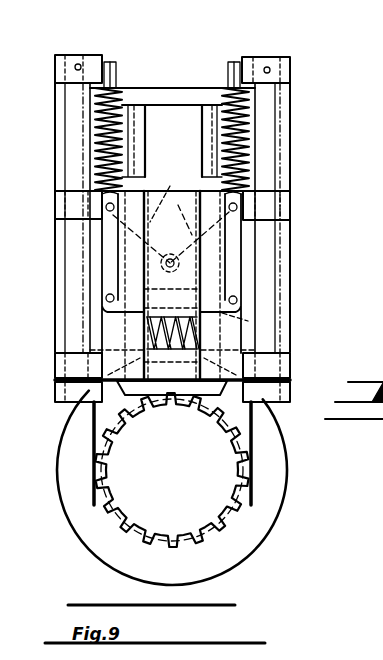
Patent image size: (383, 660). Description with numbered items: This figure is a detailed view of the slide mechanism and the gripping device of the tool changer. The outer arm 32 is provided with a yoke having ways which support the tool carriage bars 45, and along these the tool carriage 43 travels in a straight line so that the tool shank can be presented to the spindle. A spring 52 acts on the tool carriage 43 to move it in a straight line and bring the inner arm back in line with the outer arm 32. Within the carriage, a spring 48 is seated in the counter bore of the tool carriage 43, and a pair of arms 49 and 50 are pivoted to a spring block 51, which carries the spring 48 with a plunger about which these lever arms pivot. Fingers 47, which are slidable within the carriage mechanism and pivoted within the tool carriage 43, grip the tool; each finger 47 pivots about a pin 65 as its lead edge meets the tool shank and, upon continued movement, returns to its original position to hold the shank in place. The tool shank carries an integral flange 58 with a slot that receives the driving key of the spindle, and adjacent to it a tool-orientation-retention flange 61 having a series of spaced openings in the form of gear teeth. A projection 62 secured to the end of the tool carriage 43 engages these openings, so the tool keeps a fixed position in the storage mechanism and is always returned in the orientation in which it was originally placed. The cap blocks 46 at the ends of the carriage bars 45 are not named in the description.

The arm 32 is at (291, 113).
The tool carriage 43 is at (72, 203).
The tool carriage bars 45 is at (75, 250).
The cap block 46 is at (79, 64).
The fingers 47 is at (95, 428).
The spring 48 is at (150, 328).
The arm 49 is at (159, 198).
The arm 50 is at (171, 238).
The spring block 51 is at (247, 323).
The spring 52 is at (120, 90).
The flange 58 is at (273, 525).
The tool-orientation-retention flange 61 is at (117, 520).
The projection 62 is at (172, 397).
The pin 65 is at (106, 297).